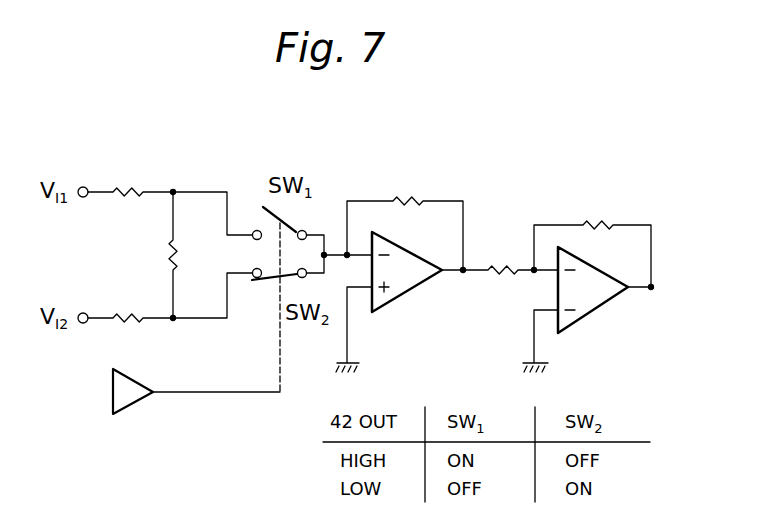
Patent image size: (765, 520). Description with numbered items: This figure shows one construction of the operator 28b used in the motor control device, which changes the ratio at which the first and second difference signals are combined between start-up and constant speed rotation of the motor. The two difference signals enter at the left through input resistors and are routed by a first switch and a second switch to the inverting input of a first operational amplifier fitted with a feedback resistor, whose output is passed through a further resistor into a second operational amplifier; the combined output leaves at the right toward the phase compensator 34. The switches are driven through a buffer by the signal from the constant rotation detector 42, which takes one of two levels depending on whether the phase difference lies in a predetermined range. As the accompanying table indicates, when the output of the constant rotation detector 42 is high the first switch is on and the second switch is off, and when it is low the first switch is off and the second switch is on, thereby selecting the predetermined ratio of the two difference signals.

The operator 28b is at (419, 176).
The phase compensator 34 is at (651, 287).
The constant rotation detector 42 is at (113, 392).